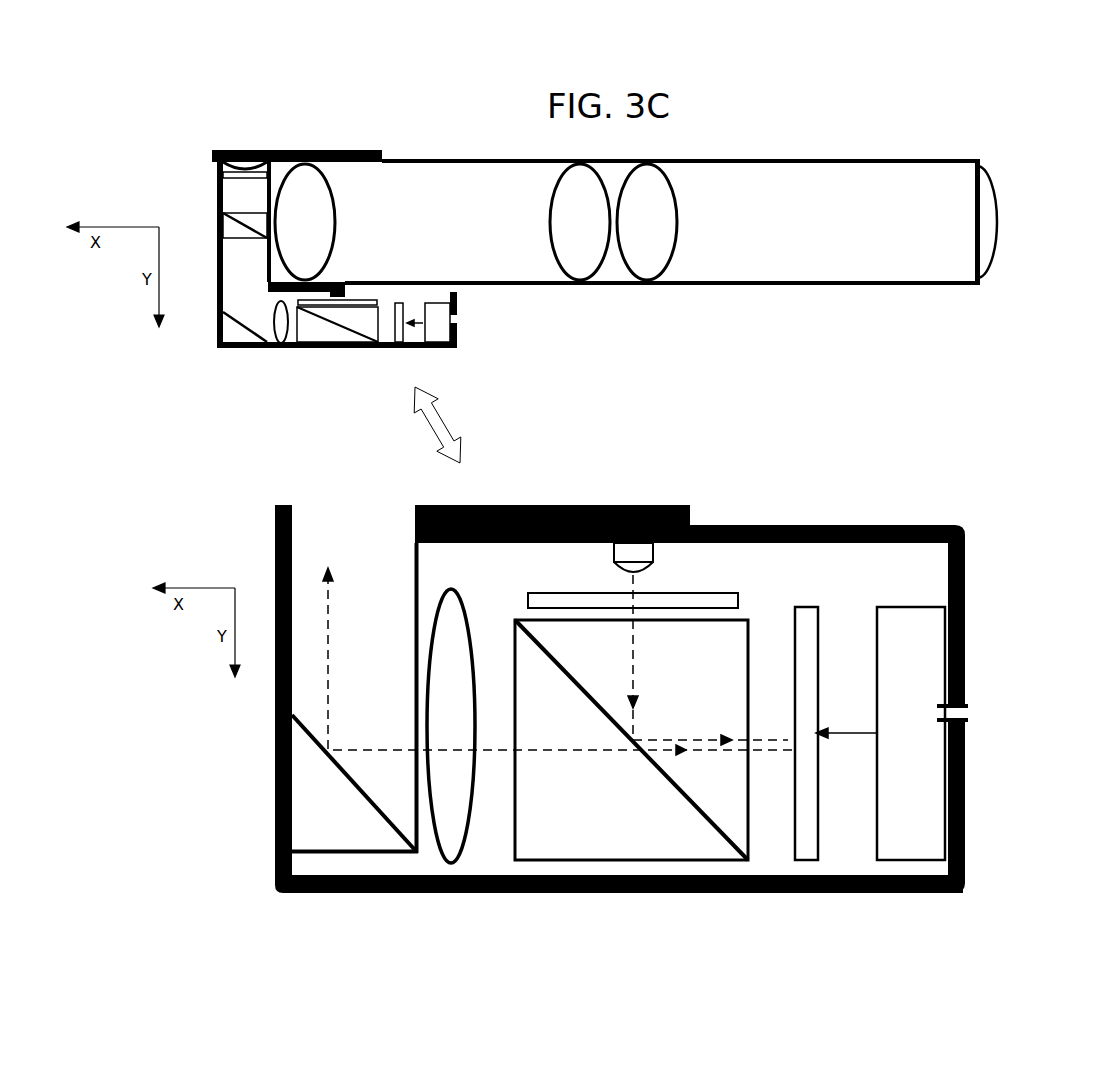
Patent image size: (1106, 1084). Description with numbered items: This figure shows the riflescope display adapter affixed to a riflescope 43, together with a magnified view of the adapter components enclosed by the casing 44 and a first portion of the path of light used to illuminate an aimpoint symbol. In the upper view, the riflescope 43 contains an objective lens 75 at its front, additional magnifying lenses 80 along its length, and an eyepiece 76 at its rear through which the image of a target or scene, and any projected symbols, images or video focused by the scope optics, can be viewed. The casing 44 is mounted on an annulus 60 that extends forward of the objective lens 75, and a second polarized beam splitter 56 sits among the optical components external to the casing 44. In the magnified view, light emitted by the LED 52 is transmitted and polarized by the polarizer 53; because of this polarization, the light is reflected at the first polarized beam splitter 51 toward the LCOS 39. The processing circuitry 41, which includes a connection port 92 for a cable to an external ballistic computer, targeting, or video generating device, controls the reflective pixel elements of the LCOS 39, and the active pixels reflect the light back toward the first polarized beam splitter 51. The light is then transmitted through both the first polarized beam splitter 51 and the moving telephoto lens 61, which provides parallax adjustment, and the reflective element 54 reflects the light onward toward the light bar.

The LCOS 39 is at (805, 606).
The processing circuitry 41 is at (906, 605).
The riflescope 43 is at (860, 285).
The casing 44 is at (458, 341).
The first polarized beam splitter 51 is at (736, 845).
The LED 52 is at (612, 549).
The polarizer 53 is at (566, 592).
The reflective element 54 is at (356, 782).
The second polarized beam splitter 56 is at (222, 226).
The annulus 60 is at (212, 155).
The moving telephoto lens 61 is at (462, 596).
The objective lens 75 is at (336, 271).
The eyepiece 76 is at (1000, 264).
The magnifying lenses 80 is at (549, 228).
The connection port 92 is at (968, 707).